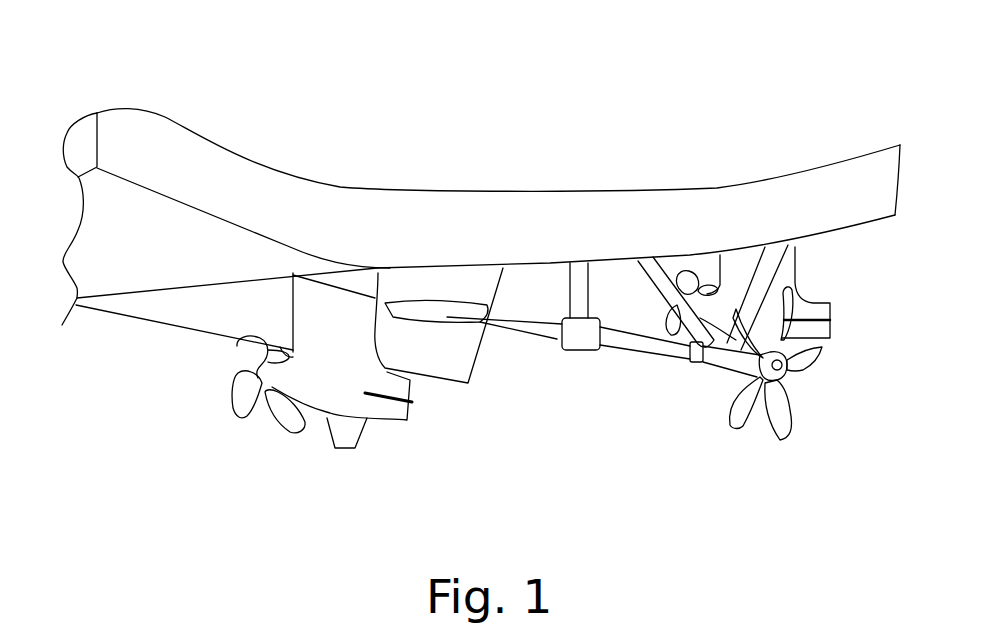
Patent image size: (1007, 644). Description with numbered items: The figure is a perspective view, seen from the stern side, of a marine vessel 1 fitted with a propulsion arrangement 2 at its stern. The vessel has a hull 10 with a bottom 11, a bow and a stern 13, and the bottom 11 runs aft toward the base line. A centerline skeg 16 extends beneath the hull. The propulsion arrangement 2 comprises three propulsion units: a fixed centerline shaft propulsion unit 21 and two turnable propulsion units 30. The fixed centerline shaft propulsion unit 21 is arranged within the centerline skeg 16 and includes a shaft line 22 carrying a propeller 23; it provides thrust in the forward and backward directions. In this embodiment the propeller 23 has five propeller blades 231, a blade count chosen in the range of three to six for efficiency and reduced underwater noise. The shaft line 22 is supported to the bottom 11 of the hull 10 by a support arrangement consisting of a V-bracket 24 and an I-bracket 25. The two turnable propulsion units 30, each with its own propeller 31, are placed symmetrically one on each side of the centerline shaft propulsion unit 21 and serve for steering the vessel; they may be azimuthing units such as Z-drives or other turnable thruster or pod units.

The marine vessel 1 is at (779, 106).
The hull 10 is at (89, 251).
The bottom 11 is at (180, 291).
The stern 13 is at (412, 235).
The centerline skeg 16 is at (448, 348).
The propulsion arrangement 2 is at (633, 463).
The fixed centerline shaft propulsion unit 21 is at (617, 355).
The shaft line 22 is at (685, 348).
The propeller 23 is at (834, 407).
The propeller blades 231 is at (737, 424).
The V-bracket 24 is at (643, 263).
The I-bracket 25 is at (573, 263).
The turnable propulsion units 30 is at (318, 383).
The propellers 31 is at (236, 430).